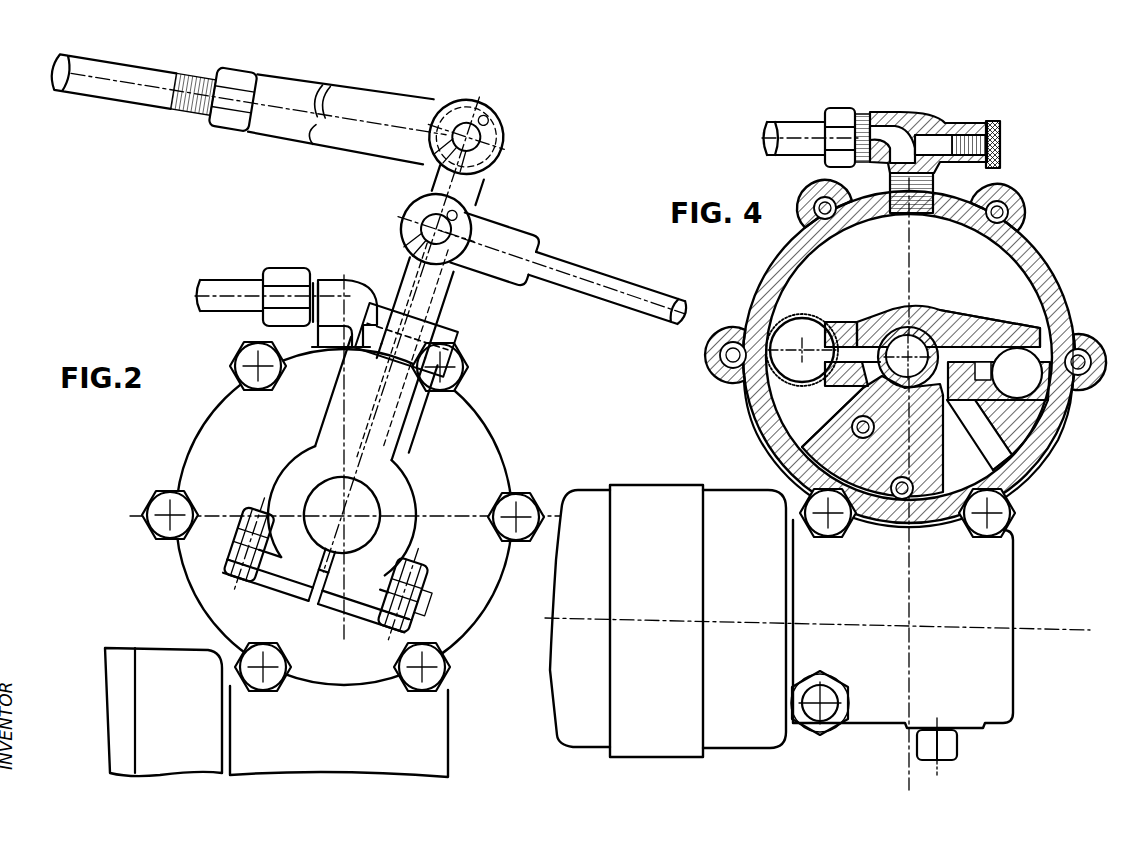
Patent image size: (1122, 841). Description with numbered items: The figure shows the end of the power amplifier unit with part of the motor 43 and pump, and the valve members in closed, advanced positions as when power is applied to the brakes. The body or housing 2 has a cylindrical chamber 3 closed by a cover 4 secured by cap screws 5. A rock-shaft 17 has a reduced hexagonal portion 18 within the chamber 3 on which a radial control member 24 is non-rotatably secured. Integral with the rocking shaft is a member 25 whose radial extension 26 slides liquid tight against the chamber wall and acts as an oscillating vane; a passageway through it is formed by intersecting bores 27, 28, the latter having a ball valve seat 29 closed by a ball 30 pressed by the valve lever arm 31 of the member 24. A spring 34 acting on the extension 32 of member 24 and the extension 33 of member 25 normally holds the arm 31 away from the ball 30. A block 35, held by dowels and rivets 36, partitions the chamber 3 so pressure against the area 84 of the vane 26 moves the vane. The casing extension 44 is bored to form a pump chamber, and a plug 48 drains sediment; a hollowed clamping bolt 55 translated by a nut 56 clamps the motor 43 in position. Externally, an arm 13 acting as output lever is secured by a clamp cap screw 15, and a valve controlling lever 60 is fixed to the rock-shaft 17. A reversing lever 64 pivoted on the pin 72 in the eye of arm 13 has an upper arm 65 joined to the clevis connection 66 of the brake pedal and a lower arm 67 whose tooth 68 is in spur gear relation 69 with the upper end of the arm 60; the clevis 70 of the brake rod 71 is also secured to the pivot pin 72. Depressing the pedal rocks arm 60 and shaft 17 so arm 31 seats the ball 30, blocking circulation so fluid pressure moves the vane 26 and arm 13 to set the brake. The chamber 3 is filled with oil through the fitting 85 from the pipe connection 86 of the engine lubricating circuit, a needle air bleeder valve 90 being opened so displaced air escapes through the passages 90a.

In FIG. 4, the body or housing 2 is at (1035, 262).
In FIG. 4, the cylindrical chamber 3 is at (909, 357).
In FIG. 2, the cover 4 is at (460, 625).
In FIG. 4, the cover 4 is at (800, 468).
In FIG. 2, the cap screws 5 is at (160, 500).
In FIG. 4, the cap screws 5 is at (1015, 514).
In FIG. 2, the arm 13 is at (376, 406).
In FIG. 2, the clamp cap screw 15 is at (331, 572).
In FIG. 2, the rock-shaft 17 is at (338, 526).
In FIG. 4, the reduced hexagonal portion 18 is at (917, 336).
In FIG. 4, the control member 24 is at (905, 318).
In FIG. 4, the member 25 is at (855, 392).
In FIG. 4, the radial extension 26 is at (1030, 430).
In FIG. 4, the bore 27 is at (1012, 448).
In FIG. 4, the bore 28 is at (1068, 345).
In FIG. 4, the ball valve seat 29 is at (990, 389).
In FIG. 4, the ball 30 is at (1017, 373).
In FIG. 4, the valve lever arm 31 is at (1000, 335).
In FIG. 4, the extension 32 is at (845, 328).
In FIG. 4, the extension 33 is at (846, 374).
In FIG. 4, the spring 34 is at (805, 314).
In FIG. 4, the block 35 is at (832, 425).
In FIG. 4, the dowels and rivets 36 is at (875, 427).
In FIG. 2, the motor housing 43 is at (163, 670).
In FIG. 4, the motor housing 43 is at (730, 732).
In FIG. 2, the extension 44 is at (440, 740).
In FIG. 4, the extension 44 is at (1008, 590).
In FIG. 4, the plug 48 is at (945, 750).
In FIG. 4, the clamping bolt 55 is at (816, 712).
In FIG. 4, the nut 56 is at (834, 725).
In FIG. 2, the valve controlling lever 60 is at (386, 406).
In FIG. 2, the lever 64 is at (458, 185).
In FIG. 2, the upper arm 65 is at (466, 136).
In FIG. 2, the clevis connection 66 is at (405, 108).
In FIG. 2, the lower arm 67 is at (420, 298).
In FIG. 2, the tooth 68 is at (406, 340).
In FIG. 2, the spur gear relation 69 is at (468, 372).
In FIG. 2, the clevis 70 is at (493, 237).
In FIG. 2, the brake rod 71 is at (622, 282).
In FIG. 2, the pivot pin 72 is at (436, 228).
In FIG. 4, the area 84 is at (985, 460).
In FIG. 2, the fitting 85 is at (360, 300).
In FIG. 4, the fitting 85 is at (915, 125).
In FIG. 2, the pipe connection 86 is at (232, 292).
In FIG. 4, the pipe connection 86 is at (797, 132).
In FIG. 4, the needle air bleeder valve 90 is at (1002, 132).
In FIG. 4, the passages 90a is at (952, 134).